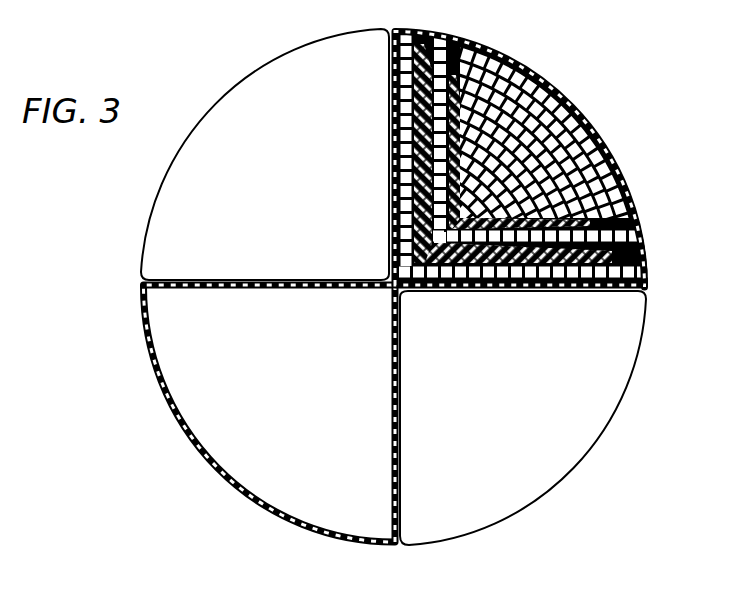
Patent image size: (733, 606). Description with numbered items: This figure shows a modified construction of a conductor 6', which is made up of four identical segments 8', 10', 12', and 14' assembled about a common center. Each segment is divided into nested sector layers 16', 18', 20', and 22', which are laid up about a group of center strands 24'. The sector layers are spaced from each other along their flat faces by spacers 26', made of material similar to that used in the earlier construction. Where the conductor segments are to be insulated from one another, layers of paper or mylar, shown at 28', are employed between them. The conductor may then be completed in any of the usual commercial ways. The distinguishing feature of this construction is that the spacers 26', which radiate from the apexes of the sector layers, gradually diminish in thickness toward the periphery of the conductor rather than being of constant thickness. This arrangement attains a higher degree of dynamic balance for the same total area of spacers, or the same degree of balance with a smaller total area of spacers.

The conductor 6' is at (520, 146).
The segment 8' is at (265, 154).
The segment 10' is at (418, 275).
The segment 12' is at (545, 418).
The segment 14' is at (263, 413).
The sector layer 16' is at (378, 149).
The sector layer 18' is at (483, 153).
The sector layer 20' is at (500, 140).
The sector layer 22' is at (471, 152).
The center strands 24' is at (418, 287).
The spacers 26' is at (500, 259).
The insulating layers 28' is at (388, 274).